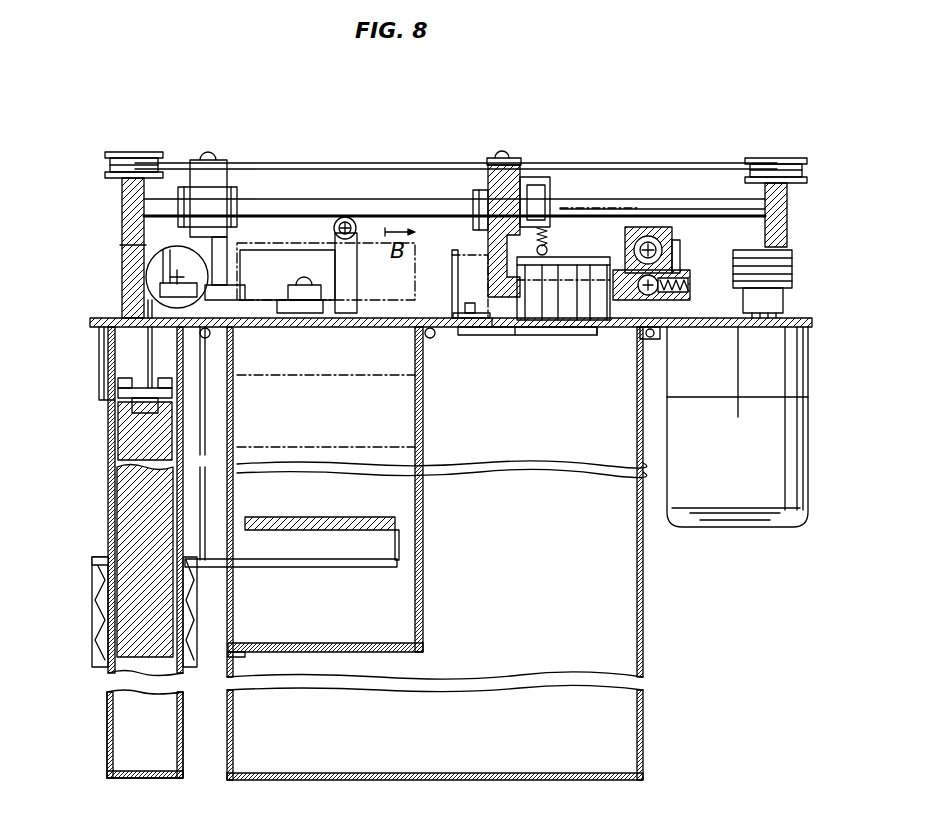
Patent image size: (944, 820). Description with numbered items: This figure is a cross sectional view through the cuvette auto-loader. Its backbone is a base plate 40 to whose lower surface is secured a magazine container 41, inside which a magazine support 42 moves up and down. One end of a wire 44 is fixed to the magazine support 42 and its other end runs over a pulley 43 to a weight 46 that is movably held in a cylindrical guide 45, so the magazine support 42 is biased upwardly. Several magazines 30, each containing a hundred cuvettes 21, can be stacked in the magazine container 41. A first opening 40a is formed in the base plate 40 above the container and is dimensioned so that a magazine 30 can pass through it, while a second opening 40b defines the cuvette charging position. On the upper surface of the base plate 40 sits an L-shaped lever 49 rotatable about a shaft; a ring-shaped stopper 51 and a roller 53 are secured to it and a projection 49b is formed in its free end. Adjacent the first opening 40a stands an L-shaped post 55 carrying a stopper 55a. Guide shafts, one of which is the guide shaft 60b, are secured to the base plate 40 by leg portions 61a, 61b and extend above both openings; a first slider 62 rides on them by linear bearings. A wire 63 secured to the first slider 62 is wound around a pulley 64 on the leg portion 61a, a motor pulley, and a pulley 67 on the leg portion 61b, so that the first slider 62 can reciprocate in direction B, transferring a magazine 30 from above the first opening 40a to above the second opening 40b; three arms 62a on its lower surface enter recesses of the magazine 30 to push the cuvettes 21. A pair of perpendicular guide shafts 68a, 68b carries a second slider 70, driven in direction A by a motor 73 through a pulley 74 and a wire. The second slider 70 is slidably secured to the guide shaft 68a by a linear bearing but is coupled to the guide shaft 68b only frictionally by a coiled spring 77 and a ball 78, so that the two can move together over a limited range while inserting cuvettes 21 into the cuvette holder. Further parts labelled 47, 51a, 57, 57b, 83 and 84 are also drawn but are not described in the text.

The cuvette 21 is at (578, 322).
The magazine 30 is at (618, 210).
The base plate 40 is at (100, 318).
The first opening 40a is at (434, 336).
The second opening 40b is at (612, 335).
The magazine container 41 is at (423, 390).
The magazine support 42 is at (400, 521).
The pulley 43 is at (147, 278).
The wire 44 is at (200, 513).
The cylindrical guide 45 is at (112, 490).
The weight 46 is at (120, 445).
The spring 47 is at (95, 585).
The L-shaped lever 49 is at (453, 250).
The projection 49b is at (493, 335).
The ring-shaped stopper 51 is at (288, 282).
The bearing foot 51a is at (312, 282).
The roller 53 is at (138, 258).
The L-shaped post 55 is at (390, 250).
The stopper 55a is at (358, 267).
The support 57 is at (517, 337).
The support bracket 57b is at (470, 275).
The guide shaft 60b is at (620, 200).
The leg portion 61a is at (120, 245).
The leg portion 61b is at (787, 212).
The first slider 62 is at (502, 175).
The arms 62a is at (523, 335).
The wire 63 is at (700, 200).
The pulley 64 is at (150, 152).
The pulley 67 is at (783, 158).
The guide shaft 68a is at (675, 245).
The guide shaft 68b is at (668, 335).
The second slider 70 is at (640, 210).
The motor 73 is at (795, 430).
The pulley 74 is at (792, 258).
The coiled spring 77 is at (688, 283).
The ball 78 is at (688, 296).
The clamp 83 is at (562, 255).
The spring plunger 84 is at (540, 228).